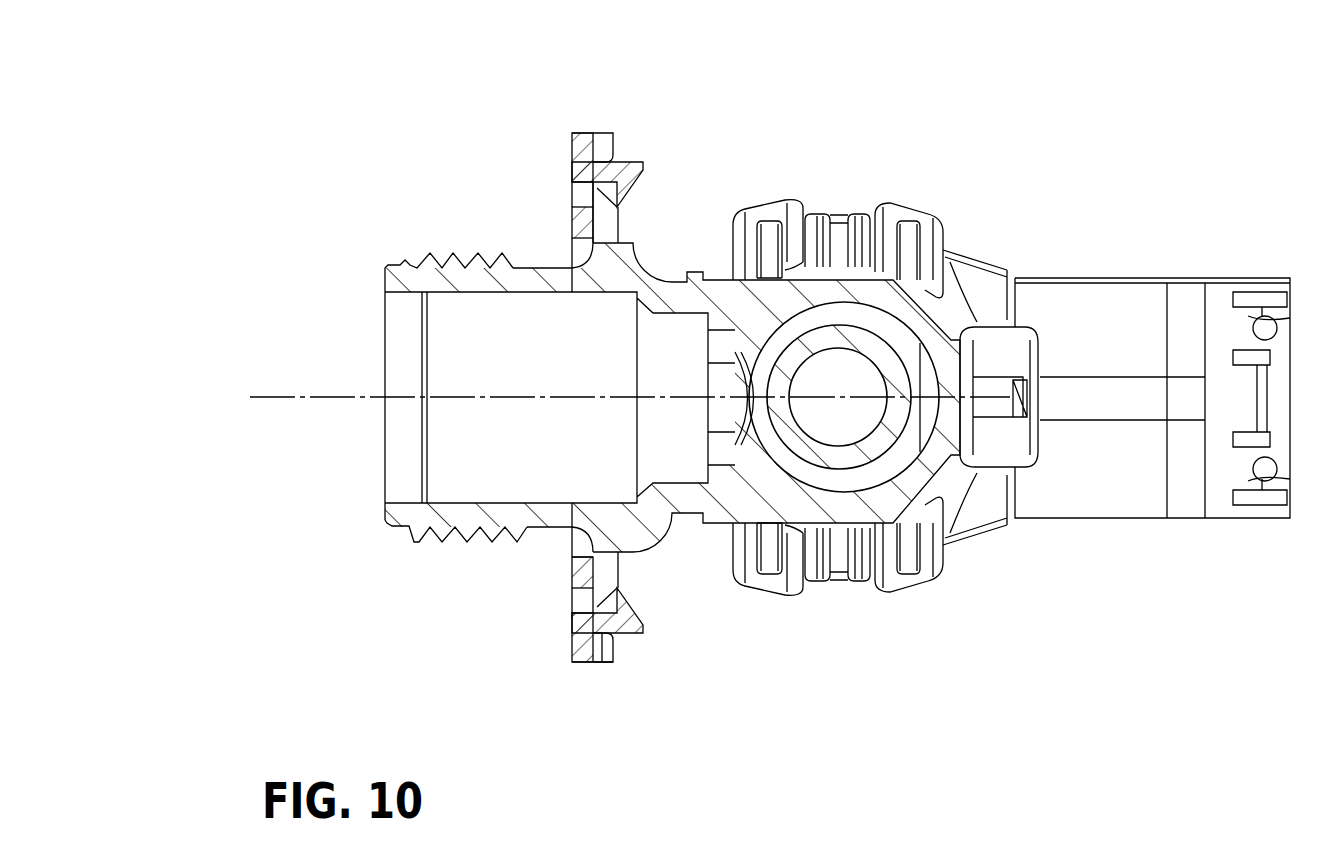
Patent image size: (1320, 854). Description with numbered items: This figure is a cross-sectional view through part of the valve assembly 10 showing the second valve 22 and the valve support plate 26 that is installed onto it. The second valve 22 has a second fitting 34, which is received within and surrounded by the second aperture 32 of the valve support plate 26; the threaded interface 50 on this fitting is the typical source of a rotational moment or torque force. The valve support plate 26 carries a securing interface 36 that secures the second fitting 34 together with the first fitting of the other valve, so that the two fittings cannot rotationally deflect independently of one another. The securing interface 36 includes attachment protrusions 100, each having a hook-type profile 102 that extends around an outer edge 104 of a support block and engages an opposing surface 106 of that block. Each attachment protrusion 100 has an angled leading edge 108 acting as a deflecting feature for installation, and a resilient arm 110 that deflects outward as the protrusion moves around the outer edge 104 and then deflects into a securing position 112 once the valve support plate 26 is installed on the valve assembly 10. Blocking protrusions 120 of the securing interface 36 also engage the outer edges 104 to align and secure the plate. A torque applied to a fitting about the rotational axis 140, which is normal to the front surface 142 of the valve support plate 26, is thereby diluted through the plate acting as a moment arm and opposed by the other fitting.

The valve assembly 10 is at (1057, 160).
The second valve 22 is at (946, 592).
The valve support plate 26 is at (556, 642).
The second aperture 32 is at (568, 543).
The second fitting 34 is at (435, 248).
The securing interface 36 is at (556, 143).
The threaded interface 50 is at (405, 543).
The attachment protrusion 100 is at (642, 646).
The hook-type profile 102 is at (645, 606).
The outer edge 104 is at (604, 663).
The opposing surface 106 is at (635, 218).
The angled leading edge 108 is at (640, 183).
The resilient arm 110 is at (612, 158).
The securing position 112 is at (589, 122).
The blocking protrusion 120 is at (583, 252).
The rotational axis 140 is at (340, 393).
The front surface 142 is at (568, 590).